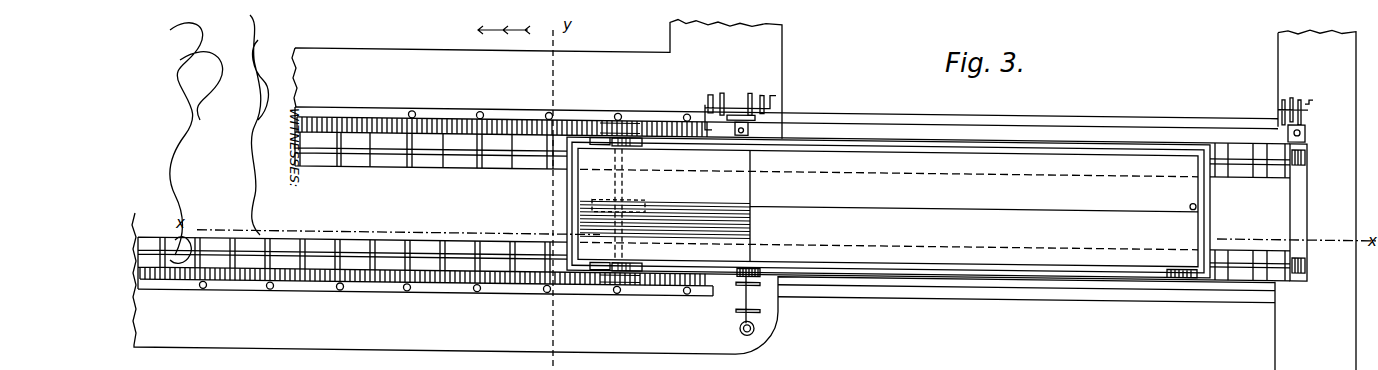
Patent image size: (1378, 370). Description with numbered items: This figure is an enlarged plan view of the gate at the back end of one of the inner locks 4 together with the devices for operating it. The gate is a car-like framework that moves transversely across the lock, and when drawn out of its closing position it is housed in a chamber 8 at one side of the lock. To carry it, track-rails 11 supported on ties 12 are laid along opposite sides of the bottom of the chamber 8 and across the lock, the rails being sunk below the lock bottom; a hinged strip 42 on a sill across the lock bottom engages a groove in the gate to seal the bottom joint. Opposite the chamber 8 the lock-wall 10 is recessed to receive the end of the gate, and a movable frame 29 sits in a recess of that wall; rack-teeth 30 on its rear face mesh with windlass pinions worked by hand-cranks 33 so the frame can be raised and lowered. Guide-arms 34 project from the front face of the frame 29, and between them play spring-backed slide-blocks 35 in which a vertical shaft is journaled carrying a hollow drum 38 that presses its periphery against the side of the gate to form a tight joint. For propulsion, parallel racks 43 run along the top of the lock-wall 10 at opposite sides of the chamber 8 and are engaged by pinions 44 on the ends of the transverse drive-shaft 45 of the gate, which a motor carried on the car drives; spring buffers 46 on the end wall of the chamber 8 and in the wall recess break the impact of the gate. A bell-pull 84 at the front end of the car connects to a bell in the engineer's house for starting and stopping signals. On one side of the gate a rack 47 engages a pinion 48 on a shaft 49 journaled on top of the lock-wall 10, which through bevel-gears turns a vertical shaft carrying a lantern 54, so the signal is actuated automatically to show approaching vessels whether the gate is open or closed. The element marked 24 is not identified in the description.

The inner lock 4 is at (987, 192).
The chamber 8 is at (703, 273).
The lock-wall 10 is at (824, 192).
The track-rails 11 is at (505, 150).
The ties 12 is at (432, 230).
The end bracket 24 is at (1308, 180).
The vertically-movable frame 29 is at (740, 110).
The rack-teeth 30 is at (752, 105).
The hand-cranks 33 is at (775, 94).
The guide-arms 34 is at (770, 119).
The slide-blocks 35 is at (725, 135).
The hollow roller or drum 38 is at (745, 133).
The strip 42 is at (950, 290).
The racks 43 is at (423, 116).
The pinions or gears 44 is at (636, 117).
The transverse drive-shaft 45 is at (622, 144).
The spring buffers 46 is at (1306, 151).
The rack 47 is at (1180, 267).
The pinion or gear-wheel 48 is at (765, 262).
The shaft 49 is at (737, 300).
The lantern 54 is at (734, 331).
The bell-pull 84 is at (1190, 197).